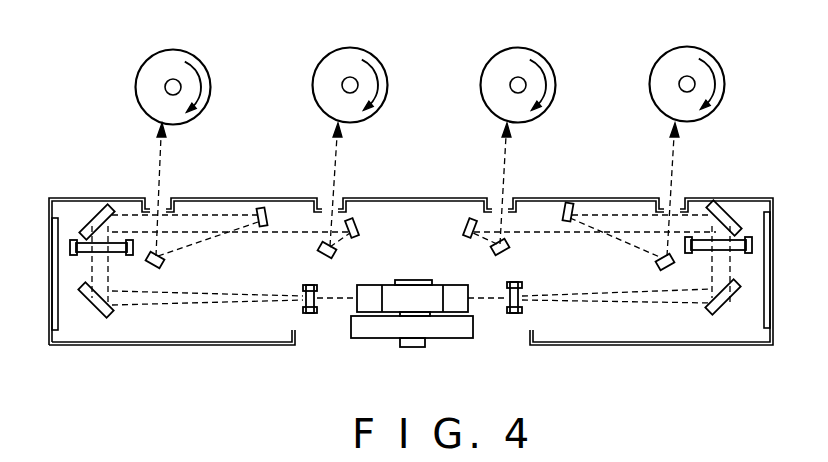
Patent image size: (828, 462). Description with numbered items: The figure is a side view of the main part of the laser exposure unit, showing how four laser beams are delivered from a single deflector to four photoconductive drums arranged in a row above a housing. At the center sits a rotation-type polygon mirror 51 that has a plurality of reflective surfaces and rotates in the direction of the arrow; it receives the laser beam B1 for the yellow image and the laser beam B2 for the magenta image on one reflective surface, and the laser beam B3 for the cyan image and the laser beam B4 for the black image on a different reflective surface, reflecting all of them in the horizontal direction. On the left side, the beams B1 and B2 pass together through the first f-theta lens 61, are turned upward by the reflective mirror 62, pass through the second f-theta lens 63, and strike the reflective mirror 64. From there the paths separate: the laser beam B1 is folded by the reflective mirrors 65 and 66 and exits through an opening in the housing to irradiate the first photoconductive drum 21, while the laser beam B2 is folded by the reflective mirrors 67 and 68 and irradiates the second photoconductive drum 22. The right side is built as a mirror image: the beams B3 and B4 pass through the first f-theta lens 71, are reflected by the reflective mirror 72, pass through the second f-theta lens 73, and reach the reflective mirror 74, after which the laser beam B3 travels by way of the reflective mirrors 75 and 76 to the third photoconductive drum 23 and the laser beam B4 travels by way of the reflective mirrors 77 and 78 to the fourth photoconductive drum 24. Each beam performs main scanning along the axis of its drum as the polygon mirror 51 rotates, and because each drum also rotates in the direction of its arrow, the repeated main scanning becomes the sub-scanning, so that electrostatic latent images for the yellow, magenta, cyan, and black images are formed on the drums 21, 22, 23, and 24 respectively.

The first photoconductive drum 21 is at (197, 52).
The second photoconductive drum 22 is at (370, 50).
The third photoconductive drum 23 is at (538, 50).
The fourth photoconductive drum 24 is at (708, 50).
The polygon mirror 51 is at (390, 283).
The fθ1 lens 61 is at (310, 315).
The reflective mirror 62 is at (86, 293).
The fθ2 lens 63 is at (70, 247).
The reflective mirror 64 is at (92, 212).
The reflective mirror 65 is at (262, 208).
The reflective mirror 66 is at (165, 266).
The reflective mirror 67 is at (360, 224).
The reflective mirror 68 is at (318, 254).
The fθ1 lens 71 is at (515, 315).
The reflective mirror 72 is at (727, 305).
The fθ2 lens 73 is at (752, 247).
The reflective mirror 74 is at (722, 208).
The reflective mirror 75 is at (567, 204).
The reflective mirror 76 is at (658, 264).
The reflective mirror 77 is at (466, 224).
The reflective mirror 78 is at (508, 252).
The laser beam B1 is at (156, 156).
The laser beam B2 is at (337, 153).
The laser beam B3 is at (505, 160).
The laser beam B4 is at (672, 153).